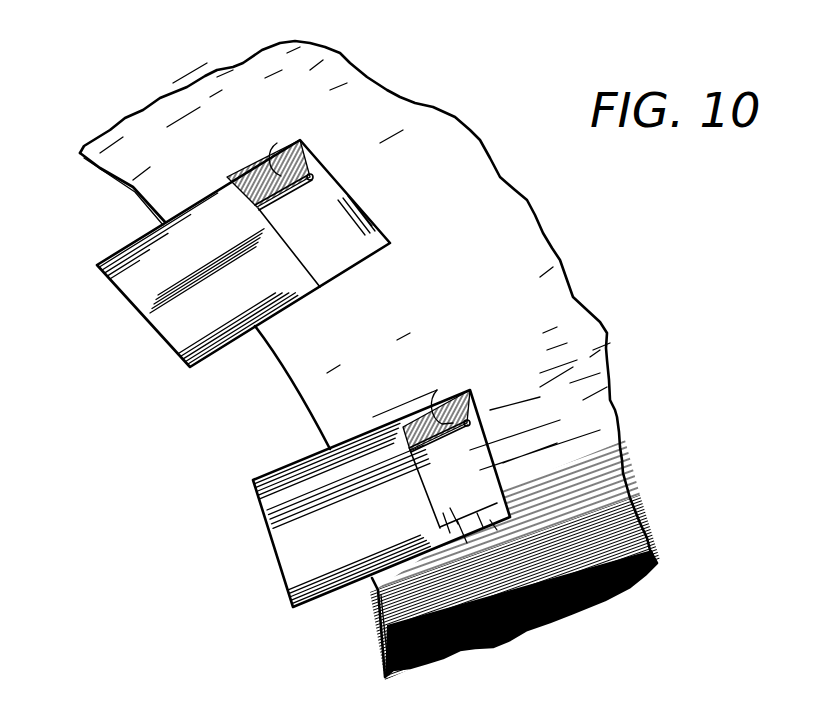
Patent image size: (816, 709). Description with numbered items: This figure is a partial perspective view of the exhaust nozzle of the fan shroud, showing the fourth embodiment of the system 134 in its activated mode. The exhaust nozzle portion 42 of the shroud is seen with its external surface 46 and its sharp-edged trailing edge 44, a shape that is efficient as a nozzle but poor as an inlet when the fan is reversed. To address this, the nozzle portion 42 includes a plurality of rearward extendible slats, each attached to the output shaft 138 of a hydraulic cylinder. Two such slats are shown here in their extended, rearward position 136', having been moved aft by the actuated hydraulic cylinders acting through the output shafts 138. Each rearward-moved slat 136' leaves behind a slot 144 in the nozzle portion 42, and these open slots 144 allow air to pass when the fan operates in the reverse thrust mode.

The exhaust nozzle portion 42 is at (255, 84).
The trailing edge 44 is at (298, 393).
The external surface 46 is at (520, 249).
The fourth embodiment of the system 134 is at (233, 147).
The slat in rearward position 136' is at (229, 398).
The output shaft 138 is at (287, 162).
The slot 144 is at (336, 246).